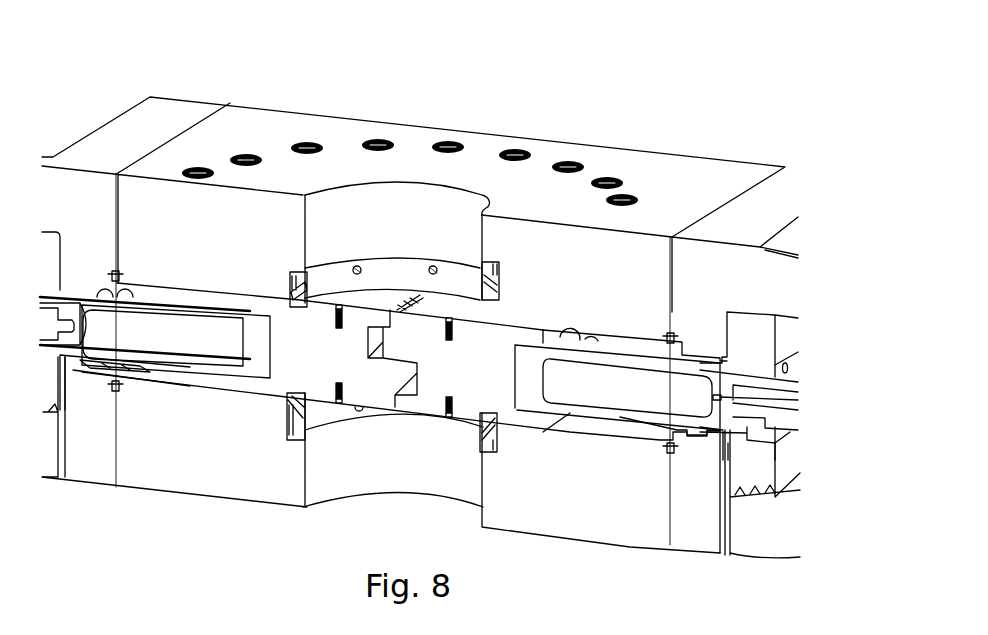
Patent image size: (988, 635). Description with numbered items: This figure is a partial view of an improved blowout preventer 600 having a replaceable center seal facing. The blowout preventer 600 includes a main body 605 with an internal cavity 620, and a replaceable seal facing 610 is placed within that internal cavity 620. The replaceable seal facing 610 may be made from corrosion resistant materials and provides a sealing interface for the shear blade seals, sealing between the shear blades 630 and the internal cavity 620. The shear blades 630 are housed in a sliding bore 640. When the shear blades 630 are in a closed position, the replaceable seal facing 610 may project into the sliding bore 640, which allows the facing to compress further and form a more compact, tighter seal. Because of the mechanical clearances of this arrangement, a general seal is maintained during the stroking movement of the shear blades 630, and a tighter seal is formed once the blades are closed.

The blowout preventer 600 is at (143, 82).
The main body 605 is at (718, 158).
The replaceable seal facing 610 is at (457, 272).
The internal cavity 620 is at (330, 203).
The shear blades 630 is at (352, 297).
The sliding bore 640 is at (296, 303).